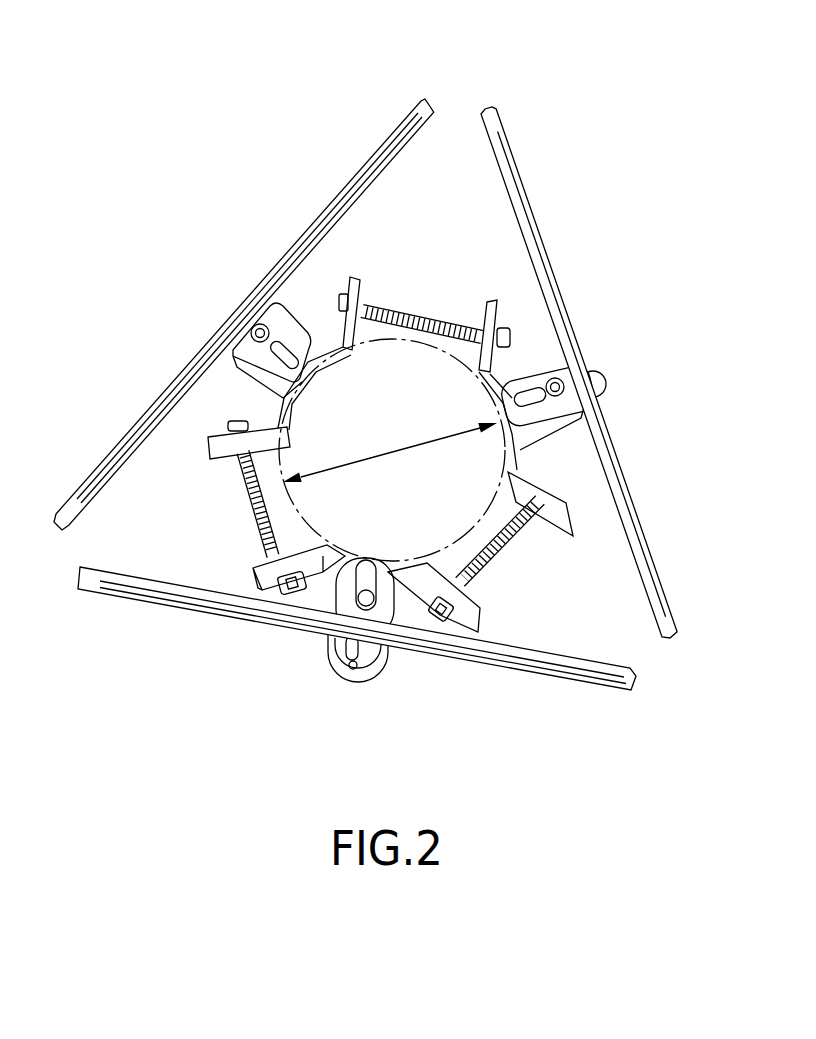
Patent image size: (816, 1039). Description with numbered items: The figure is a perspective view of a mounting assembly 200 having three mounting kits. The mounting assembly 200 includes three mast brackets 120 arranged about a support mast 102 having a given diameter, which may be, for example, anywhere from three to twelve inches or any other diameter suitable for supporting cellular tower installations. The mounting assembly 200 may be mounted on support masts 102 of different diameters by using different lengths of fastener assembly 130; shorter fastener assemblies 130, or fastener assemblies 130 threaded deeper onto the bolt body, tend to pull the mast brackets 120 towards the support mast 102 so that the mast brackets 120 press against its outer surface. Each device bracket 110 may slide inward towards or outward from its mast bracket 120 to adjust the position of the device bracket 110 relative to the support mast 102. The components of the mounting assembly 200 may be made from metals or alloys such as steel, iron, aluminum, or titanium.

The mounting assembly 200 is at (131, 99).
The device bracket 110 is at (313, 215).
The support mast 102 is at (381, 311).
The mast bracket 120 is at (262, 558).
The fastener assembly 130 is at (381, 318).